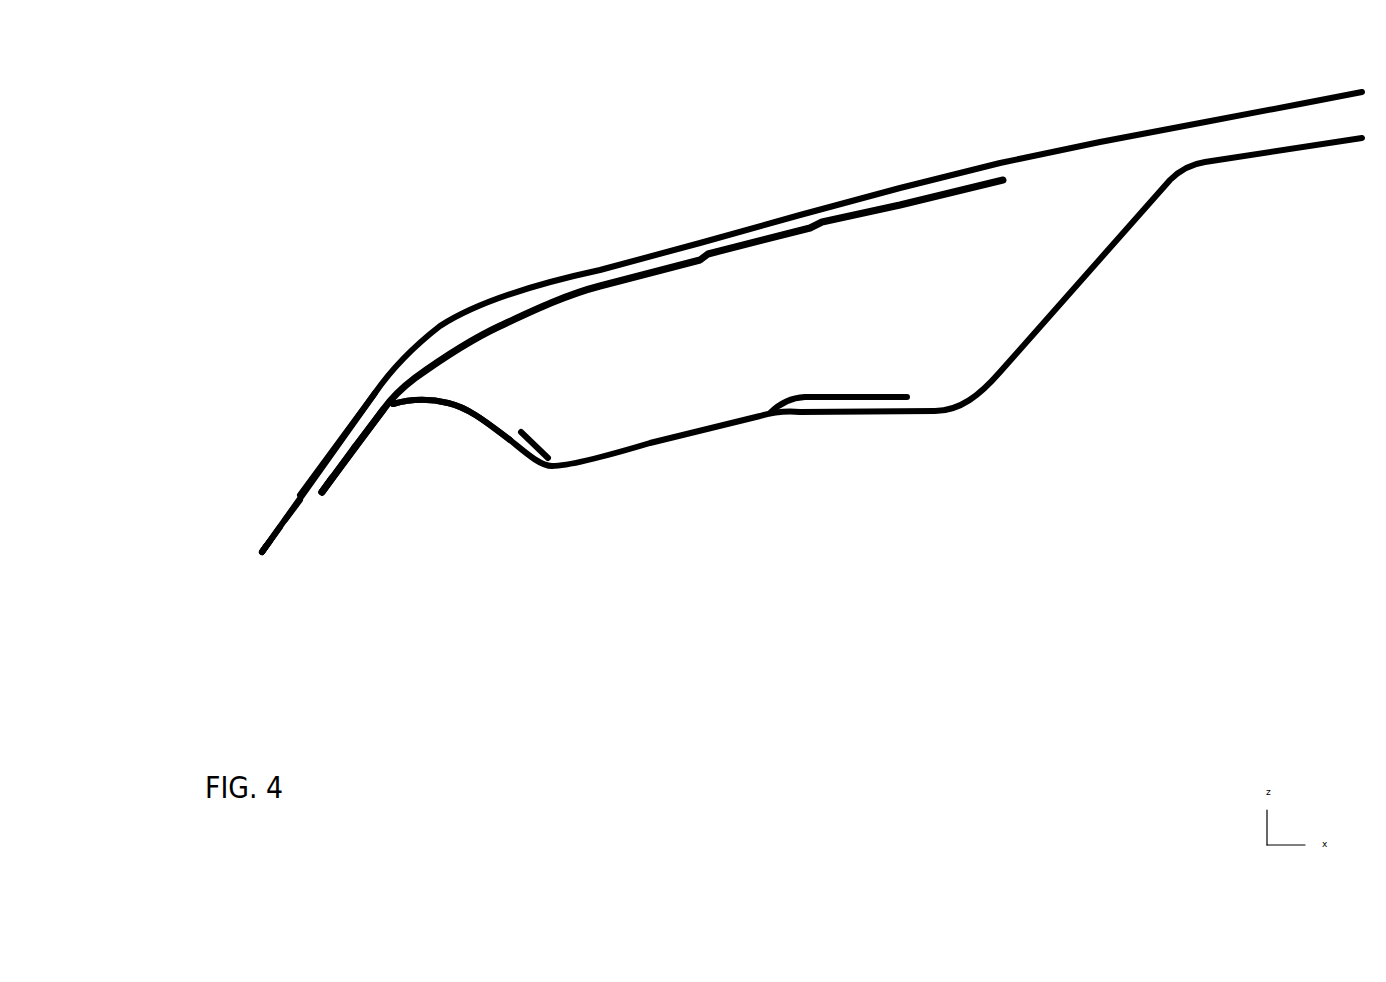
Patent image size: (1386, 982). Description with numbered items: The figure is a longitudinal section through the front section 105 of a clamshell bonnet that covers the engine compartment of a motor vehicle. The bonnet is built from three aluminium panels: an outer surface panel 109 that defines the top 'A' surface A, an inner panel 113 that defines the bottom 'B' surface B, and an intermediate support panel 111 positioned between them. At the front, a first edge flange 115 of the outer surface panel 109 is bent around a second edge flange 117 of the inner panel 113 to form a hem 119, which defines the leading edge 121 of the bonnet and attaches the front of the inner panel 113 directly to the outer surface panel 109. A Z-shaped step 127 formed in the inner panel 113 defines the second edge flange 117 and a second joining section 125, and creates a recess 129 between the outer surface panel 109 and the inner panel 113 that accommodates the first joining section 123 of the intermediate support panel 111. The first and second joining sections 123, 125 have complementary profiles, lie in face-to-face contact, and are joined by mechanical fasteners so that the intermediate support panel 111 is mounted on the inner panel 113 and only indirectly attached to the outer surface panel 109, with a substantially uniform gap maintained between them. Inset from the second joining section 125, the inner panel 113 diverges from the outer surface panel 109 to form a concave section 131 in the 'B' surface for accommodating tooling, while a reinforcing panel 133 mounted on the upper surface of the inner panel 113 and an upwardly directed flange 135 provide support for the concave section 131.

The front section 105 is at (312, 382).
The outer surface panel 109 is at (1097, 140).
The intermediate support panel 111 is at (845, 217).
The inner panel 113 is at (1025, 350).
The first edge flange 115 is at (270, 553).
The second edge flange 117 is at (285, 520).
The hem 119 is at (276, 584).
The leading edge 121 is at (255, 549).
The first joining section 123 is at (415, 400).
The second joining section 125 is at (370, 440).
The Z-shaped step 127 is at (325, 490).
The recess 129 is at (318, 469).
The concave section 131 is at (455, 440).
The reinforcing panel 133 is at (790, 401).
The upwardly directed flange 135 is at (540, 435).
The 'A' surface A is at (685, 194).
The 'B' surface B is at (943, 472).